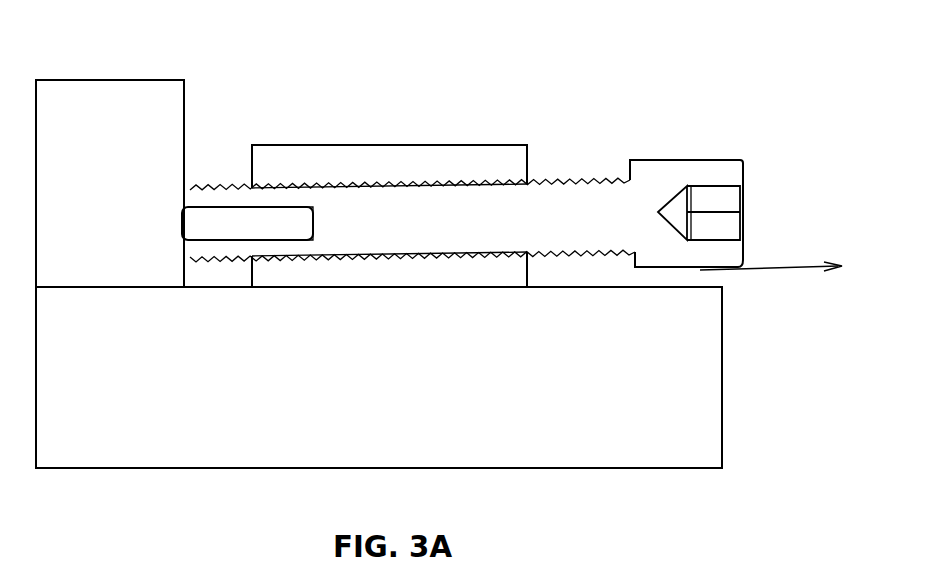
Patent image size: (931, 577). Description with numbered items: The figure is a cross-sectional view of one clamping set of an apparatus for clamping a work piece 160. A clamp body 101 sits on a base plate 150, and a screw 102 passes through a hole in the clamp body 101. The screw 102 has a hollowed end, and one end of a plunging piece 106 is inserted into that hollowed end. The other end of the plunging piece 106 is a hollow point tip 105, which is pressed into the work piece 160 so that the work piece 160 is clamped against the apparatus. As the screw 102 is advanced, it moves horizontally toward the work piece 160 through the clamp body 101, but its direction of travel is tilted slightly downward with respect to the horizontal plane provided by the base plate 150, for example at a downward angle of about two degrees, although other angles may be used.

The work piece 160 is at (110, 107).
The base plate 150 is at (692, 425).
The clamp body 101 is at (438, 160).
The screw 102 is at (702, 172).
The hollow point tip 105 is at (180, 225).
The plunging piece 106 is at (235, 220).